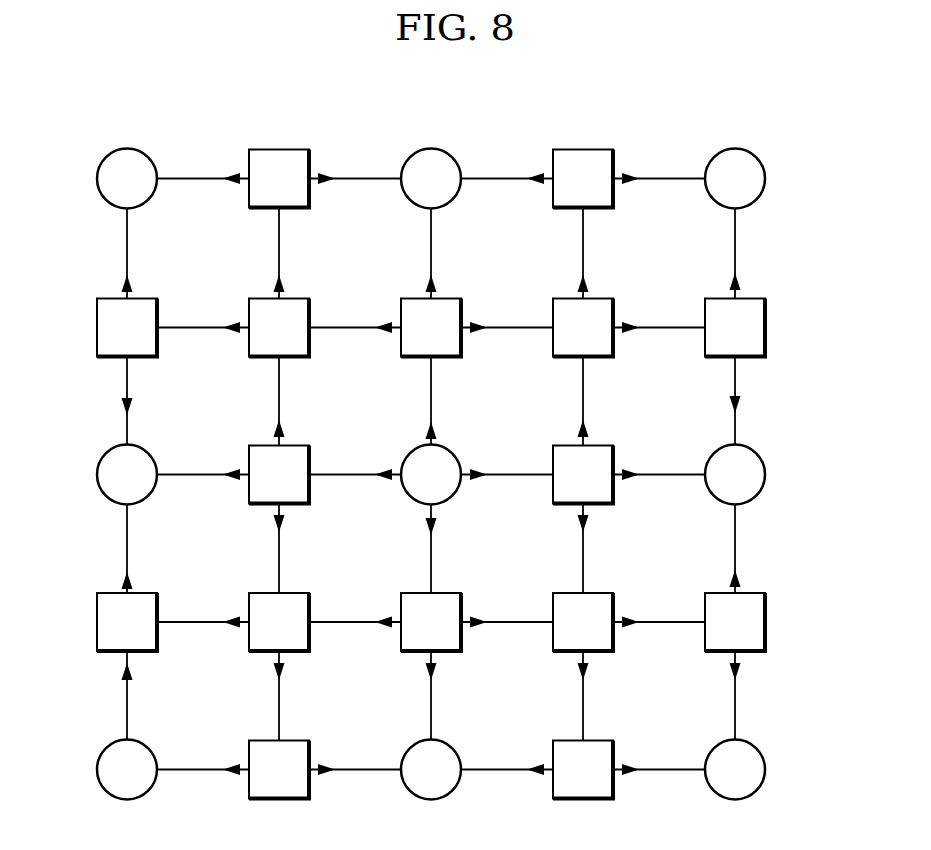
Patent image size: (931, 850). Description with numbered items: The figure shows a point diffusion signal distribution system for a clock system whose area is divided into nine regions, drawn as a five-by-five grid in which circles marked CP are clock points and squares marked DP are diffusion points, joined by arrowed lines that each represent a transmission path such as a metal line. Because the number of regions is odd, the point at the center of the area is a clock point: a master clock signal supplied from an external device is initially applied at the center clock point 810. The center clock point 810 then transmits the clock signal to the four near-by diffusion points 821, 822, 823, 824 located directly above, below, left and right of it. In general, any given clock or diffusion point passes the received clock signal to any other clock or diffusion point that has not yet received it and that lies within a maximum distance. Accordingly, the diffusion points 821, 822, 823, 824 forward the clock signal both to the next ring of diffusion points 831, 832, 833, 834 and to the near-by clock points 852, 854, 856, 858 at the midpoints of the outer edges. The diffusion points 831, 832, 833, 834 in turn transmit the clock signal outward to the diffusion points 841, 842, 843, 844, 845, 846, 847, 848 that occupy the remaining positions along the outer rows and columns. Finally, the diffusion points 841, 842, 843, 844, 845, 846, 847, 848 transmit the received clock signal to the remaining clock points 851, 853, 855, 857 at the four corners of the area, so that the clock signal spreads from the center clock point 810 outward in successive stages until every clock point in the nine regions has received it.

The center clock point 810 is at (452, 452).
The diffusion point 821 is at (295, 446).
The diffusion point 822 is at (447, 593).
The diffusion point 823 is at (599, 446).
The diffusion point 824 is at (447, 298).
The diffusion point 831 is at (295, 298).
The diffusion point 832 is at (295, 593).
The diffusion point 833 is at (599, 593).
The diffusion point 834 is at (599, 298).
The diffusion point 841 is at (295, 150).
The diffusion point 842 is at (143, 298).
The diffusion point 843 is at (143, 593).
The diffusion point 844 is at (295, 740).
The diffusion point 845 is at (599, 740).
The diffusion point 846 is at (751, 593).
The diffusion point 847 is at (751, 298).
The diffusion point 848 is at (599, 150).
The clock point 851 is at (148, 156).
The clock point 852 is at (148, 452).
The clock point 853 is at (148, 746).
The clock point 854 is at (452, 746).
The clock point 855 is at (756, 746).
The clock point 856 is at (756, 452).
The clock point 857 is at (756, 156).
The clock point 858 is at (452, 156).